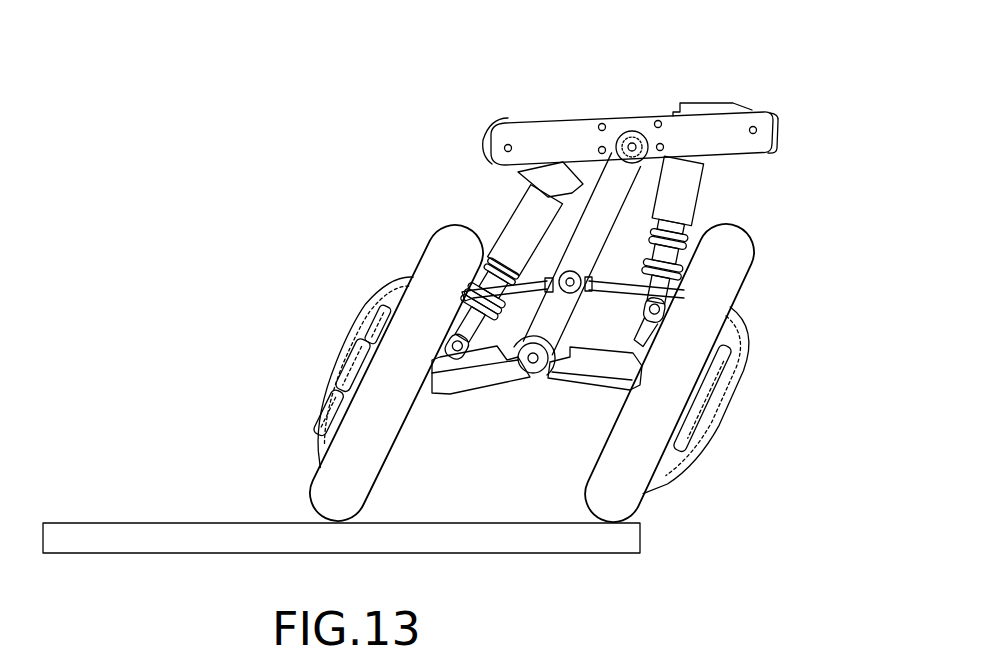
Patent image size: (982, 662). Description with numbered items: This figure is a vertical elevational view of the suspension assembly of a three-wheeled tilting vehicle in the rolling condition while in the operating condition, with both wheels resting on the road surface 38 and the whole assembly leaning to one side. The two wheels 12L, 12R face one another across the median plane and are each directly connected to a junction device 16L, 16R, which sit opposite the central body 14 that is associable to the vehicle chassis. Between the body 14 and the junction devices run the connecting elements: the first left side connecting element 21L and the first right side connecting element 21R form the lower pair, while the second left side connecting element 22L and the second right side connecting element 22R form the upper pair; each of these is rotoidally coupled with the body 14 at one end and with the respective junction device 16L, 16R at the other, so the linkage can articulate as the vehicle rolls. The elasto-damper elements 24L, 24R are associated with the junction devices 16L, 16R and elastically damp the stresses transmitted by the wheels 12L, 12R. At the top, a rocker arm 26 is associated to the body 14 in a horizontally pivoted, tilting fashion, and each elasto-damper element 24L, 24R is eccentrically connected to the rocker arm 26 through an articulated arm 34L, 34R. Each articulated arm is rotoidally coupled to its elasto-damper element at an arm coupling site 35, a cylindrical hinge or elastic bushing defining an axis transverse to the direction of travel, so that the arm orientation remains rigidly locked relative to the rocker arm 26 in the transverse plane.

The right wheel 12R is at (325, 475).
The left wheel 12L is at (757, 290).
The body 14 is at (617, 187).
The right junction device 16R is at (436, 338).
The left junction device 16L is at (700, 428).
The first right side connecting element 21R is at (486, 378).
The first left side connecting element 21L is at (587, 380).
The second right side connecting element 22R is at (485, 257).
The second left side connecting element 22L is at (640, 262).
The right elasto-damper element 24R is at (528, 226).
The left elasto-damper element 24L is at (685, 183).
The rocker arm 26 is at (541, 130).
The right articulated arm 34R is at (513, 173).
The left articulated arm 34L is at (690, 110).
The arm coupling site 35 is at (586, 187).
The road surface 38 is at (153, 518).